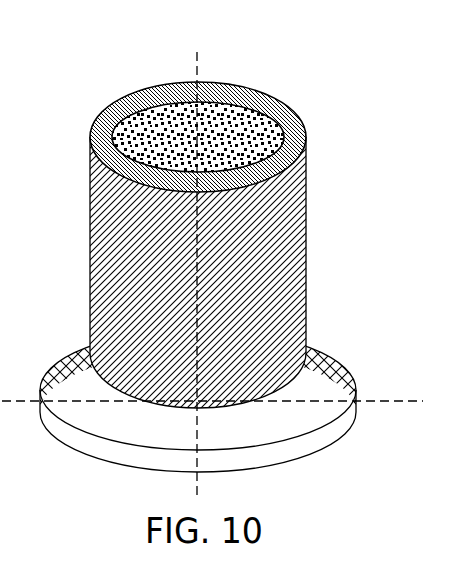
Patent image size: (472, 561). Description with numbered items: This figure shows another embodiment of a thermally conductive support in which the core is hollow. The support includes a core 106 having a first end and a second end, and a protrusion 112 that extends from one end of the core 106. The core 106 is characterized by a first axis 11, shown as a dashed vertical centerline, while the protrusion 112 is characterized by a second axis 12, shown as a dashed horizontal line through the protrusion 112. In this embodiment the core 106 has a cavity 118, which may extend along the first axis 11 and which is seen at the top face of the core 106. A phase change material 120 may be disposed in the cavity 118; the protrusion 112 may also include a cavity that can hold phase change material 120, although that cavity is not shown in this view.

The first axis 11 is at (197, 67).
The second axis 12 is at (393, 401).
The core 106 is at (306, 242).
The protrusion 112 is at (326, 340).
The cavity 118 is at (242, 130).
The phase change material 120 is at (148, 130).